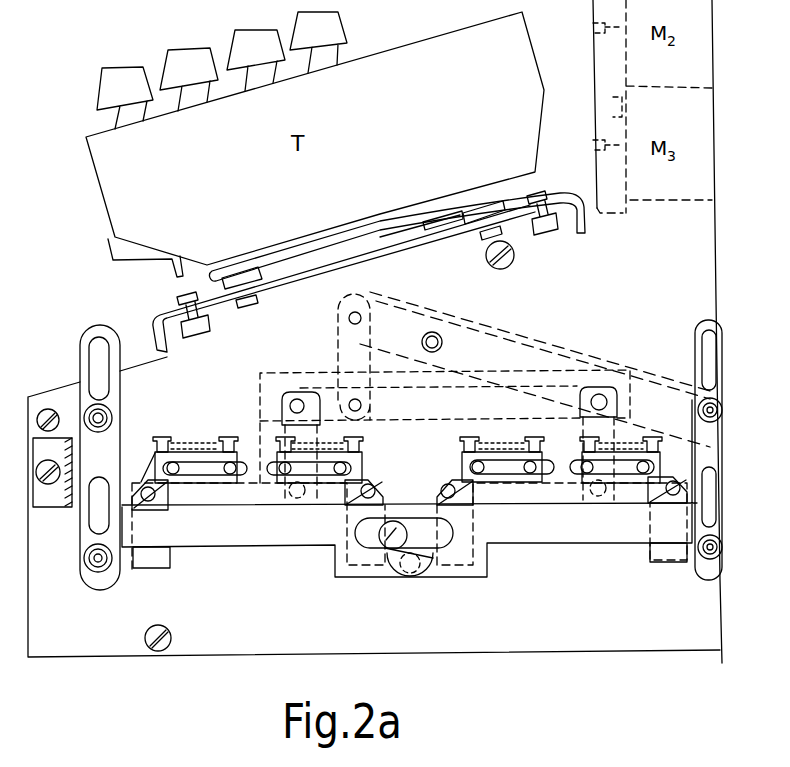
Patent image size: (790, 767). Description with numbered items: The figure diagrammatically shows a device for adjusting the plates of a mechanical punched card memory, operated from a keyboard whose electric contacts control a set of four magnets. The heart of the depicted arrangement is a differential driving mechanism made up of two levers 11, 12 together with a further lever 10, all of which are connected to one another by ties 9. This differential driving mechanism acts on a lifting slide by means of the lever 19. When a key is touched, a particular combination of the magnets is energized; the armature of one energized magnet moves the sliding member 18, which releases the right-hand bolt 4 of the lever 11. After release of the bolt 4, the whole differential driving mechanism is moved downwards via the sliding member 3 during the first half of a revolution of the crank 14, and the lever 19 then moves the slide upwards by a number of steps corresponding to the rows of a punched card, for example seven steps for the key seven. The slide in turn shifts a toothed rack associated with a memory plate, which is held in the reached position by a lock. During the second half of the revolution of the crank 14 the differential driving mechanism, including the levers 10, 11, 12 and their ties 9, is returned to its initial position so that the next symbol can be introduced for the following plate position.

The sliding member 3 is at (267, 530).
The bolt 4 is at (383, 486).
The ties 9 is at (335, 352).
The lever 10 is at (423, 406).
The lever 11 is at (221, 495).
The lever 12 is at (555, 488).
The crank 14 is at (389, 546).
The sliding member 18 is at (280, 440).
The lever 19 is at (536, 362).